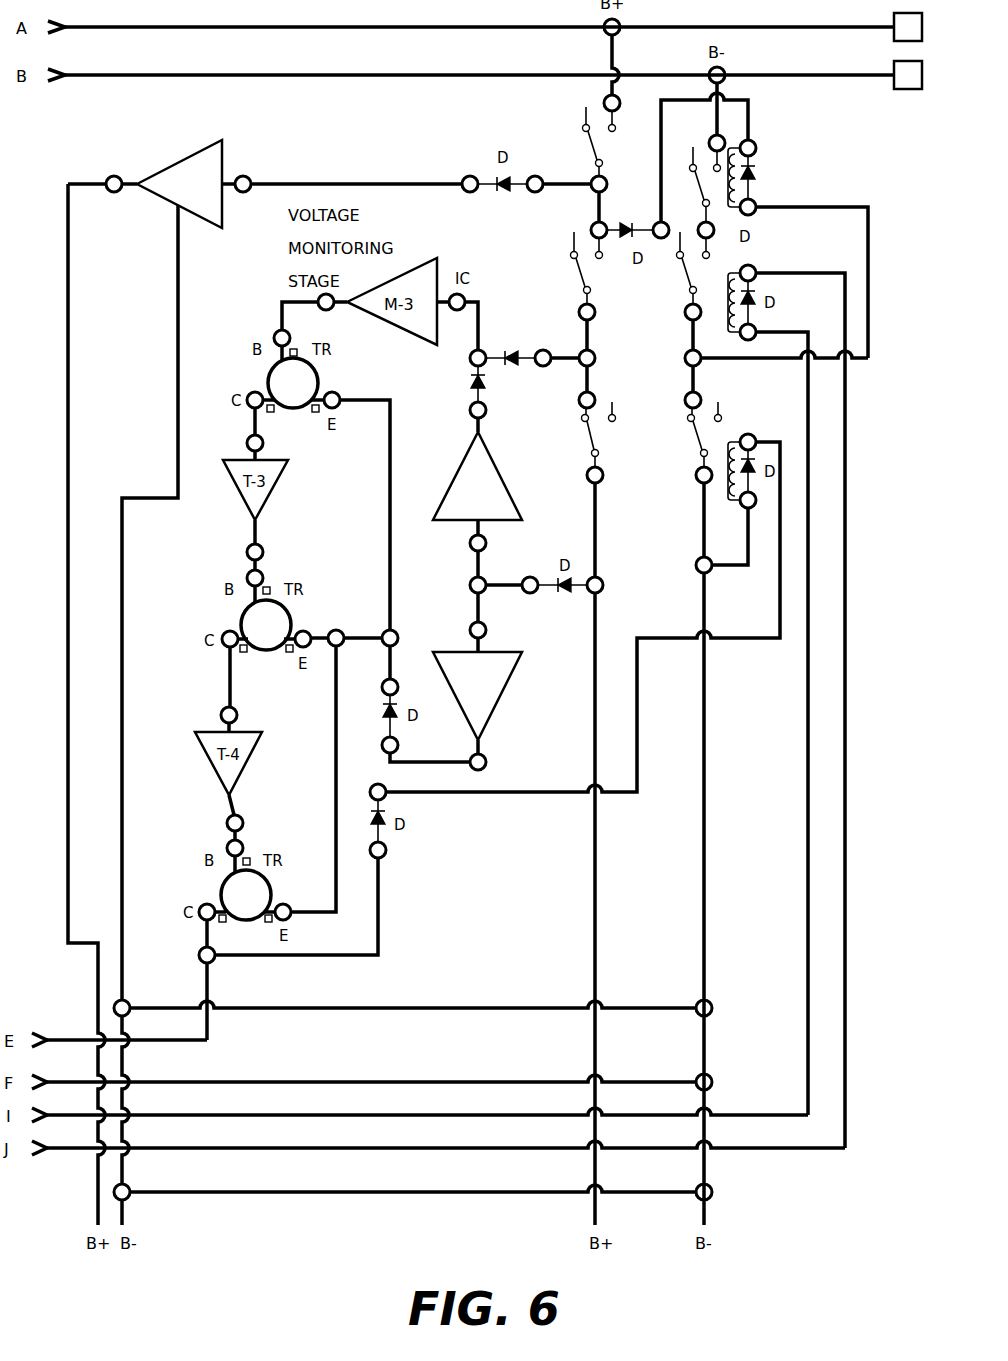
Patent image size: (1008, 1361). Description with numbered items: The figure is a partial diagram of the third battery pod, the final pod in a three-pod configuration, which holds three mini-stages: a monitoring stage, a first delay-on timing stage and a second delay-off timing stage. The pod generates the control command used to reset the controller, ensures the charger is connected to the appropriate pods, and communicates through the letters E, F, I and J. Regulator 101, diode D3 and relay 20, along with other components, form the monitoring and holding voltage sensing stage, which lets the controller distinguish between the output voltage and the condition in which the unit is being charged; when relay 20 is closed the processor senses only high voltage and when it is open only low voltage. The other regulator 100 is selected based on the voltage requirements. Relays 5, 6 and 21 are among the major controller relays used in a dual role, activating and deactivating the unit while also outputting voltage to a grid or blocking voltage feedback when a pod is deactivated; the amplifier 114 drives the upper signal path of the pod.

The ITEM-(114) amplifier/inverter 114 is at (176, 180).
The controller relay 5 is at (609, 212).
The controller relay 6 is at (761, 159).
The diode D3 is at (520, 340).
The regulator 101 is at (493, 484).
The regulator 100 is at (493, 704).
The relay 20 is at (606, 464).
The controller relay 21 is at (694, 464).